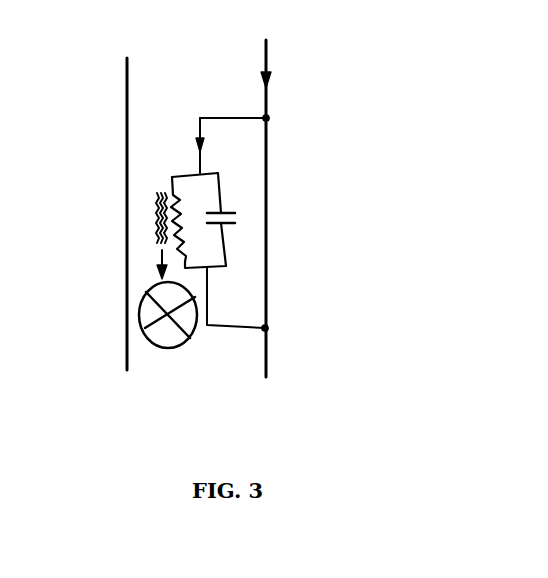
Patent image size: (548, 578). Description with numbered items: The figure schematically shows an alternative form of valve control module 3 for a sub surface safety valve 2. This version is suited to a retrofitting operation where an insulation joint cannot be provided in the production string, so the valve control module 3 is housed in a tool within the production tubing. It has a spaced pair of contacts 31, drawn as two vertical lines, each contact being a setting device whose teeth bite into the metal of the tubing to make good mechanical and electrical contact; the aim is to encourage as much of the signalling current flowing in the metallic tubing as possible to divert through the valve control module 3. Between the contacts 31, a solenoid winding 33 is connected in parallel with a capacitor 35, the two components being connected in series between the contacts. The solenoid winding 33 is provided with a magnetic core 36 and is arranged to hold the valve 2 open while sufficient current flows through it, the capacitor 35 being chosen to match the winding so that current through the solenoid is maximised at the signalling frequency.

The sub surface safety valve 2 is at (145, 323).
The valve control module 3 is at (240, 171).
The spaced pair of contacts 31 is at (266, 117).
The solenoid winding 33 is at (172, 190).
The capacitor 35 is at (232, 223).
The magnetic core 36 is at (157, 223).